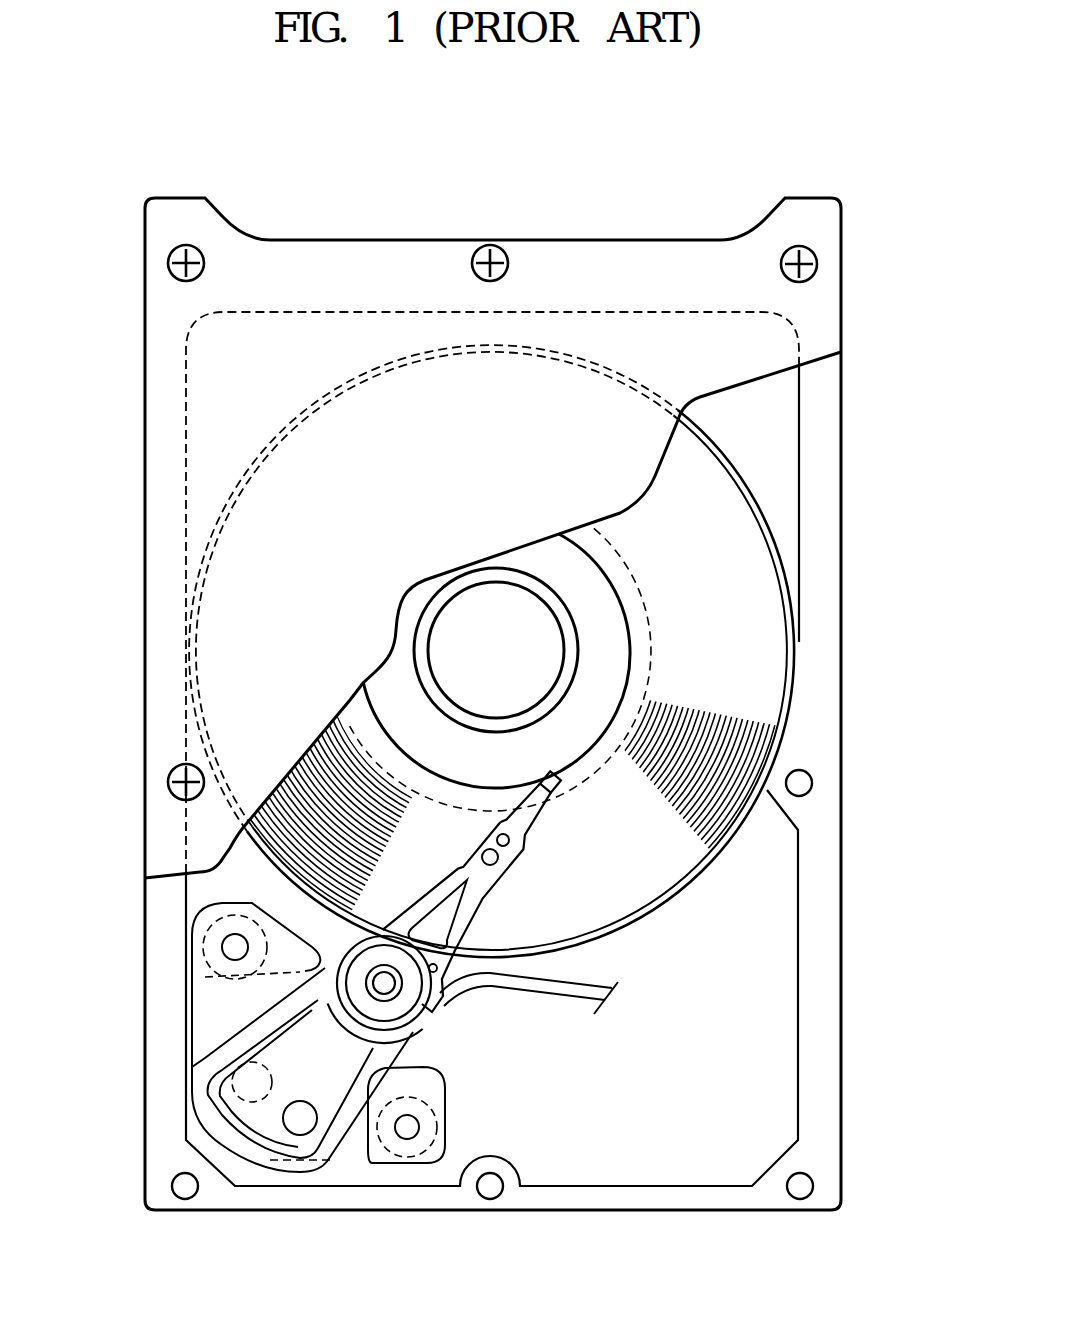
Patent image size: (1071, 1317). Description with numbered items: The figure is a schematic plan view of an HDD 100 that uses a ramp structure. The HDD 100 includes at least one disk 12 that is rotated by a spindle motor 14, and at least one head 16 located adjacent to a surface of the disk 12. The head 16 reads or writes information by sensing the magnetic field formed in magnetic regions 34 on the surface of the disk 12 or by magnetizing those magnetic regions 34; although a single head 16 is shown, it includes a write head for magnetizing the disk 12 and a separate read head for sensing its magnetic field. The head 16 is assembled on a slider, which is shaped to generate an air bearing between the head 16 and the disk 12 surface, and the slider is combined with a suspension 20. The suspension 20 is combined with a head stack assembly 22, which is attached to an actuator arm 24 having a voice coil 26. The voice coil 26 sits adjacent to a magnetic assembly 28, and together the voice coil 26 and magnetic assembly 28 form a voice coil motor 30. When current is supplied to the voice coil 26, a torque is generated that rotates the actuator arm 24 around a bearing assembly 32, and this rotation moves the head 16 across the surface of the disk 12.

The HDD 100 is at (632, 160).
The disk 12 is at (752, 585).
The spindle motor 14 is at (467, 628).
The head 16 is at (558, 784).
The suspension 20 is at (540, 798).
The head stack assembly 22 is at (472, 897).
The actuator arm 24 is at (302, 992).
The voice coil 26 is at (217, 1072).
The magnetic assembly 28 is at (235, 1016).
The voice coil motor 30 is at (353, 1138).
The bearing assembly 32 is at (398, 996).
The magnetic regions 34 is at (343, 767).